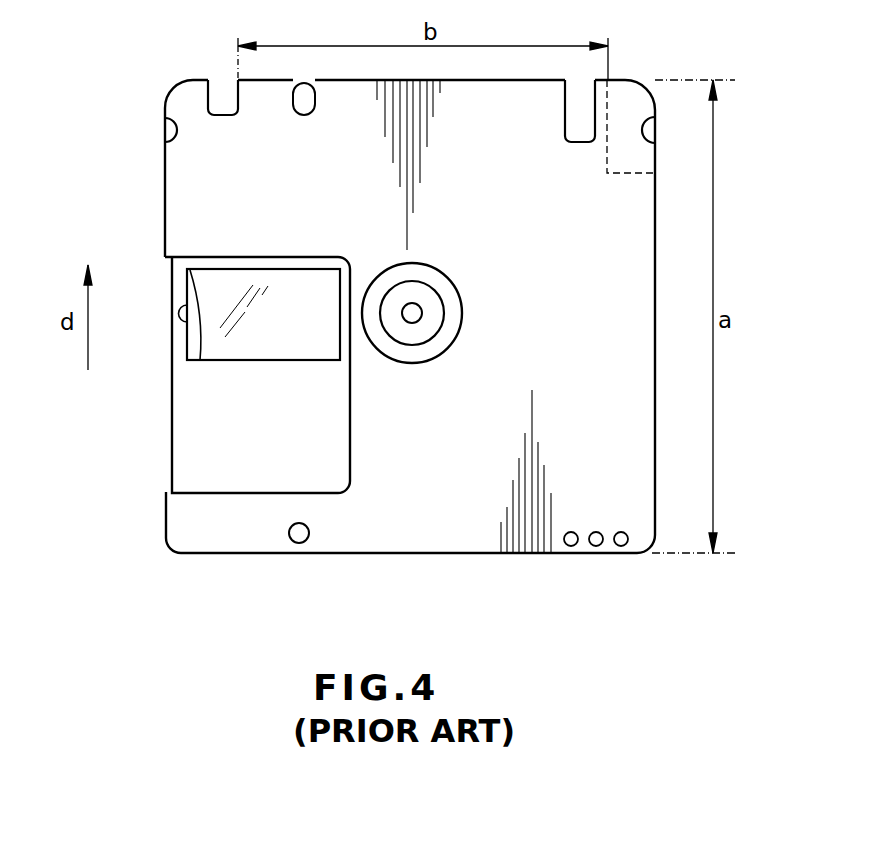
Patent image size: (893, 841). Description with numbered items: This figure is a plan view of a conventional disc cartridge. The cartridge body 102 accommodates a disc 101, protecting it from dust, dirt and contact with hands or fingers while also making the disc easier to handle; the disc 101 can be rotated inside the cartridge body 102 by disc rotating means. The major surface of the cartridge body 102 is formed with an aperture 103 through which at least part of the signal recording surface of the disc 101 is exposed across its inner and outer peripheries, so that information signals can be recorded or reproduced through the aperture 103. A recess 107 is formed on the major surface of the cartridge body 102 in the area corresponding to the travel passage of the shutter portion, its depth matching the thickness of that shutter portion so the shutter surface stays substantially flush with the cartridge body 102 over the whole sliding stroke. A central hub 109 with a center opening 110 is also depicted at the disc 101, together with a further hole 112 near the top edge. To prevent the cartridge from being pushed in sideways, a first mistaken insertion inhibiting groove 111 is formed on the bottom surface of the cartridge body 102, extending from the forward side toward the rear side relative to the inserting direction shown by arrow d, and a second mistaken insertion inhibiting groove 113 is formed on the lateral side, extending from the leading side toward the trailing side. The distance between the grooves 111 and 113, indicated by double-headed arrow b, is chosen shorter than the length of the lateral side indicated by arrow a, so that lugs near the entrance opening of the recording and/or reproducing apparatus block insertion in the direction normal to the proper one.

The disc 101 is at (243, 333).
The cartridge body 102 is at (166, 525).
The aperture 103 is at (277, 275).
The recess 107 is at (207, 492).
The hub 109 is at (417, 360).
The center hole 110 is at (425, 303).
The first mistaken insertion inhibiting groove 111 is at (237, 100).
The positioning hole 112 is at (573, 112).
The second mistaken insertion inhibiting groove 113 is at (627, 173).